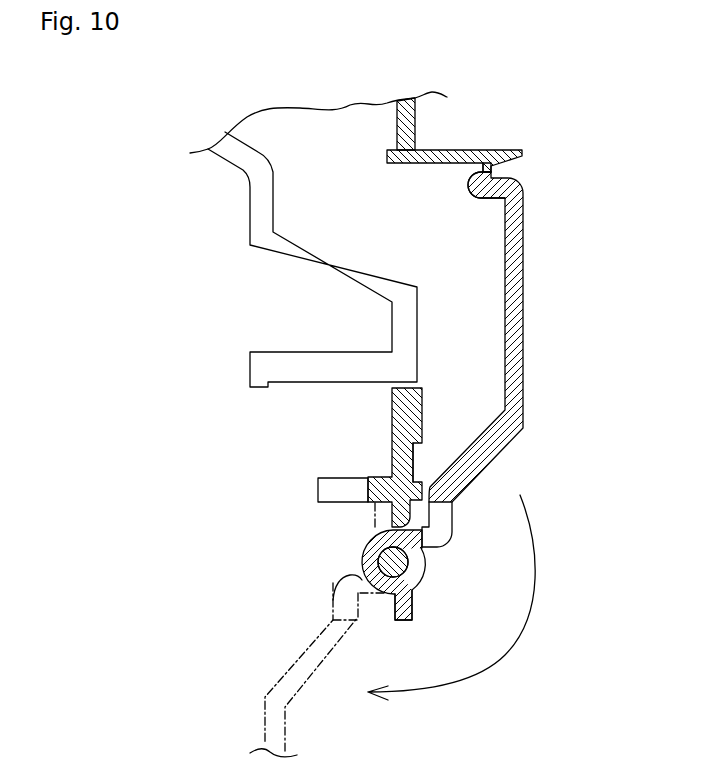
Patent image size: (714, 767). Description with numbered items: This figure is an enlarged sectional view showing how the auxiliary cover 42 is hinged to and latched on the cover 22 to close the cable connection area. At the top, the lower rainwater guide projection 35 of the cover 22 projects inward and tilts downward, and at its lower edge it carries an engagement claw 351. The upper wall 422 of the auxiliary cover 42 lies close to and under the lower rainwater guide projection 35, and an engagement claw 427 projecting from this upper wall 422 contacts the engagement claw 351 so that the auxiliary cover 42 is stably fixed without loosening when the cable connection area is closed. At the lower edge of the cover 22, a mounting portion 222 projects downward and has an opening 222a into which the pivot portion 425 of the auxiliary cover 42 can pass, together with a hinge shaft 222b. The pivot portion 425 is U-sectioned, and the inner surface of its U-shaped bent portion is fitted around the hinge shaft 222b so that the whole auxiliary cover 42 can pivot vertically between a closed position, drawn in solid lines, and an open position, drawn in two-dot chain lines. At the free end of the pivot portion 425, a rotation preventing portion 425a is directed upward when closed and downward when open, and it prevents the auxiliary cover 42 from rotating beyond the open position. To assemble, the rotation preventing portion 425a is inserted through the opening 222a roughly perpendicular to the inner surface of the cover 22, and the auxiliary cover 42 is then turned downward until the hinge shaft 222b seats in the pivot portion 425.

The cover 22 is at (397, 128).
The lower rainwater guide projection 35 is at (477, 148).
The engagement claw 351 is at (492, 173).
The engagement claw 427 is at (478, 170).
The upper wall 422 is at (490, 199).
The auxiliary cover 42 is at (541, 320).
The mounting portion 222 is at (390, 525).
The opening 222a is at (403, 474).
The hinge shaft 222b is at (360, 571).
The pivot portion 425 is at (360, 557).
The rotation preventing portion 425a is at (375, 513).